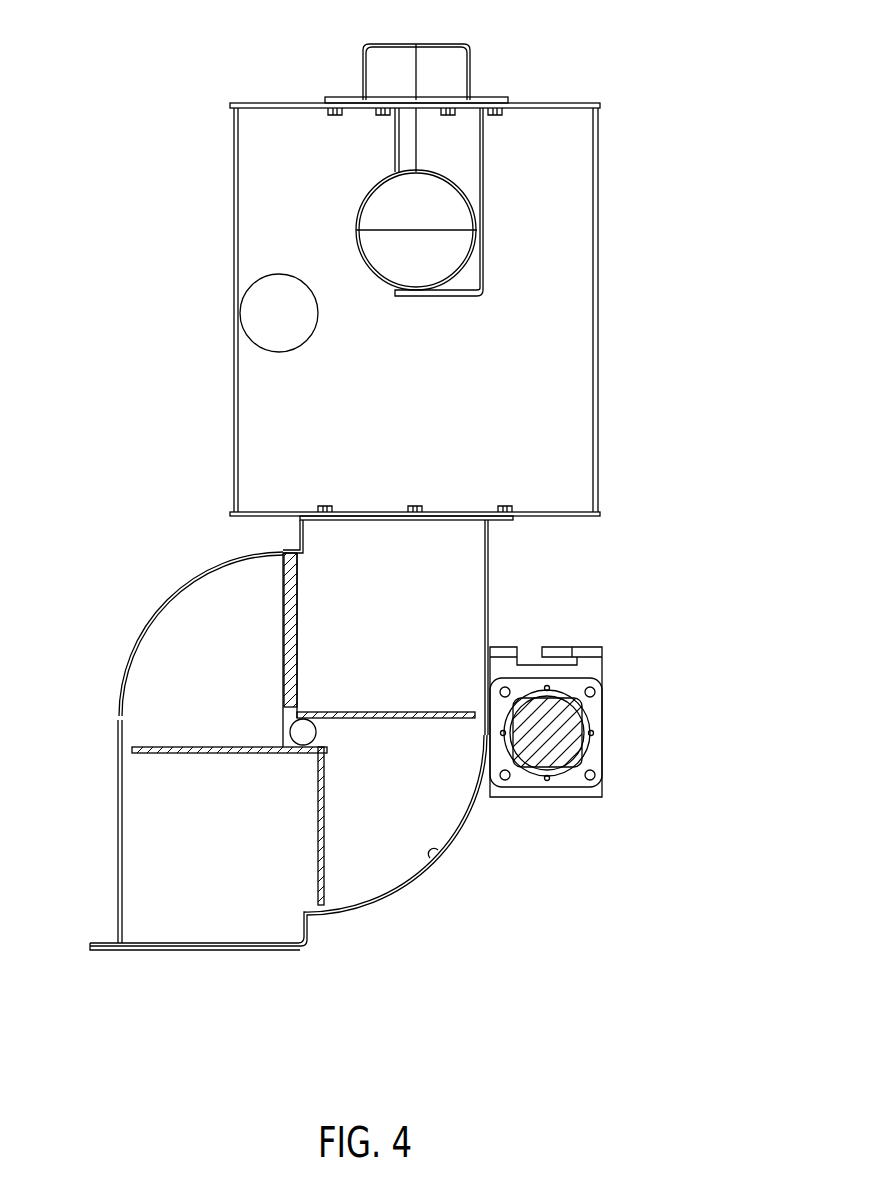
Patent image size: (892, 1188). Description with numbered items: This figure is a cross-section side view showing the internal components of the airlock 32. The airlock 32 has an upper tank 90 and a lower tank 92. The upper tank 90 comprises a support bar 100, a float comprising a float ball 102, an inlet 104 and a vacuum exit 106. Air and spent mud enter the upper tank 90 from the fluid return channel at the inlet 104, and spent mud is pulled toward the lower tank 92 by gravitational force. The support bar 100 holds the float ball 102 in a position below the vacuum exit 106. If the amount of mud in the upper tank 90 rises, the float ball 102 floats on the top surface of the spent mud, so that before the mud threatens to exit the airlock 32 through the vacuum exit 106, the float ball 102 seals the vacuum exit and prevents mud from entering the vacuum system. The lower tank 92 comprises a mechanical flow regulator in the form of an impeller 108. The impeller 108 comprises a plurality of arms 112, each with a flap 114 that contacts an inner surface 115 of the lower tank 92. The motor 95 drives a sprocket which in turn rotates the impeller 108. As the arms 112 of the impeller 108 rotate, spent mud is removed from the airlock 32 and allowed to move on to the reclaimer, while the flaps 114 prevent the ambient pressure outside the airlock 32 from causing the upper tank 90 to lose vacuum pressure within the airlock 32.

The airlock 32 is at (151, 50).
The upper tank 90 is at (465, 306).
The lower tank 92 is at (273, 733).
The motor 95 is at (596, 722).
The support bar 100 is at (552, 202).
The float ball 102 is at (312, 216).
The inlet 104 is at (227, 308).
The vacuum exit 106 is at (478, 55).
The impeller 108 is at (183, 793).
The arms 112 is at (289, 739).
The flap 114 is at (241, 632).
The inner surface 115 is at (485, 860).